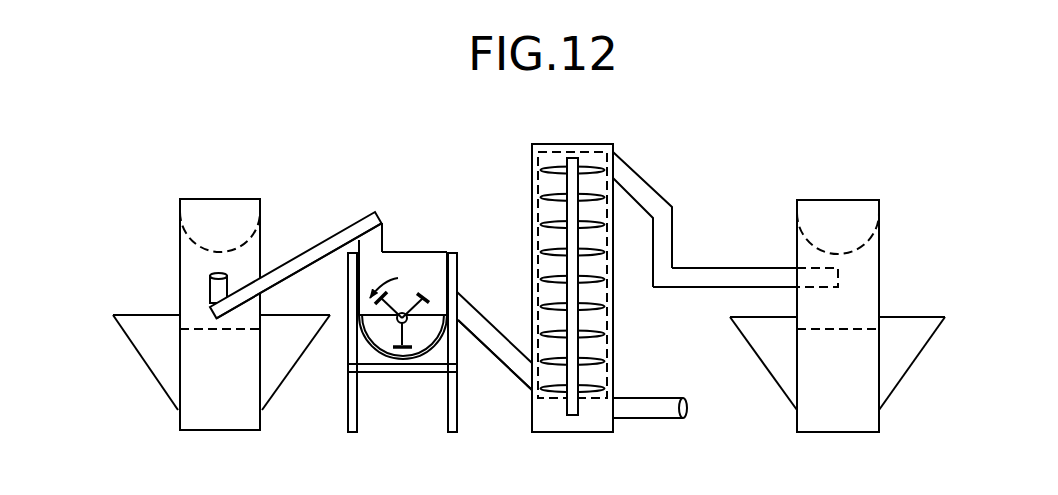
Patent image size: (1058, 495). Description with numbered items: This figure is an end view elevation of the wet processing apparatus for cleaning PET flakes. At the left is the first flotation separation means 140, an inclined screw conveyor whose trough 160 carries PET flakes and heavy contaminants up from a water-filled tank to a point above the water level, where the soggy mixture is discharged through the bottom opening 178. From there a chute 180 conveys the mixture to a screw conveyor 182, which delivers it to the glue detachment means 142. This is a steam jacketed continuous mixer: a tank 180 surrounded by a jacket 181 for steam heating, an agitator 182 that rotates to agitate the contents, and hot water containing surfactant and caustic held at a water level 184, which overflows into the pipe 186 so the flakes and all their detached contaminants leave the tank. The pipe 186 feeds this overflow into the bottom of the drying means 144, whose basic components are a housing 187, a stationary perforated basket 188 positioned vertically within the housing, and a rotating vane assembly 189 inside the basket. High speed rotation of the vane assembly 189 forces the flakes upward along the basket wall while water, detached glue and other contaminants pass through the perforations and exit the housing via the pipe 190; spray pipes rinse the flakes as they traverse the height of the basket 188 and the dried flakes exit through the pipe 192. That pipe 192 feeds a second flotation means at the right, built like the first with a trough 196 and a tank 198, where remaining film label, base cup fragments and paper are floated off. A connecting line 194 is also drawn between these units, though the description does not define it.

The first flotation separation means 140 is at (140, 242).
The trough 160 is at (180, 232).
The bottom opening 178 is at (222, 271).
The chute 180 is at (208, 293).
The jacket 181 is at (323, 258).
The screw conveyor 182 is at (347, 229).
The glue detachment means 142 is at (397, 242).
The water level 184 is at (457, 292).
The pipe 186 is at (482, 343).
The drying means 144 is at (497, 180).
The housing 187 is at (615, 358).
The rotating vane assembly 189 is at (578, 323).
The stationary perforated basket 188 is at (570, 413).
The pipe 190 is at (647, 420).
The pipe 192 is at (625, 163).
The horizontal pipe 194 is at (692, 267).
The trough 196 is at (880, 257).
The tank 198 is at (782, 390).